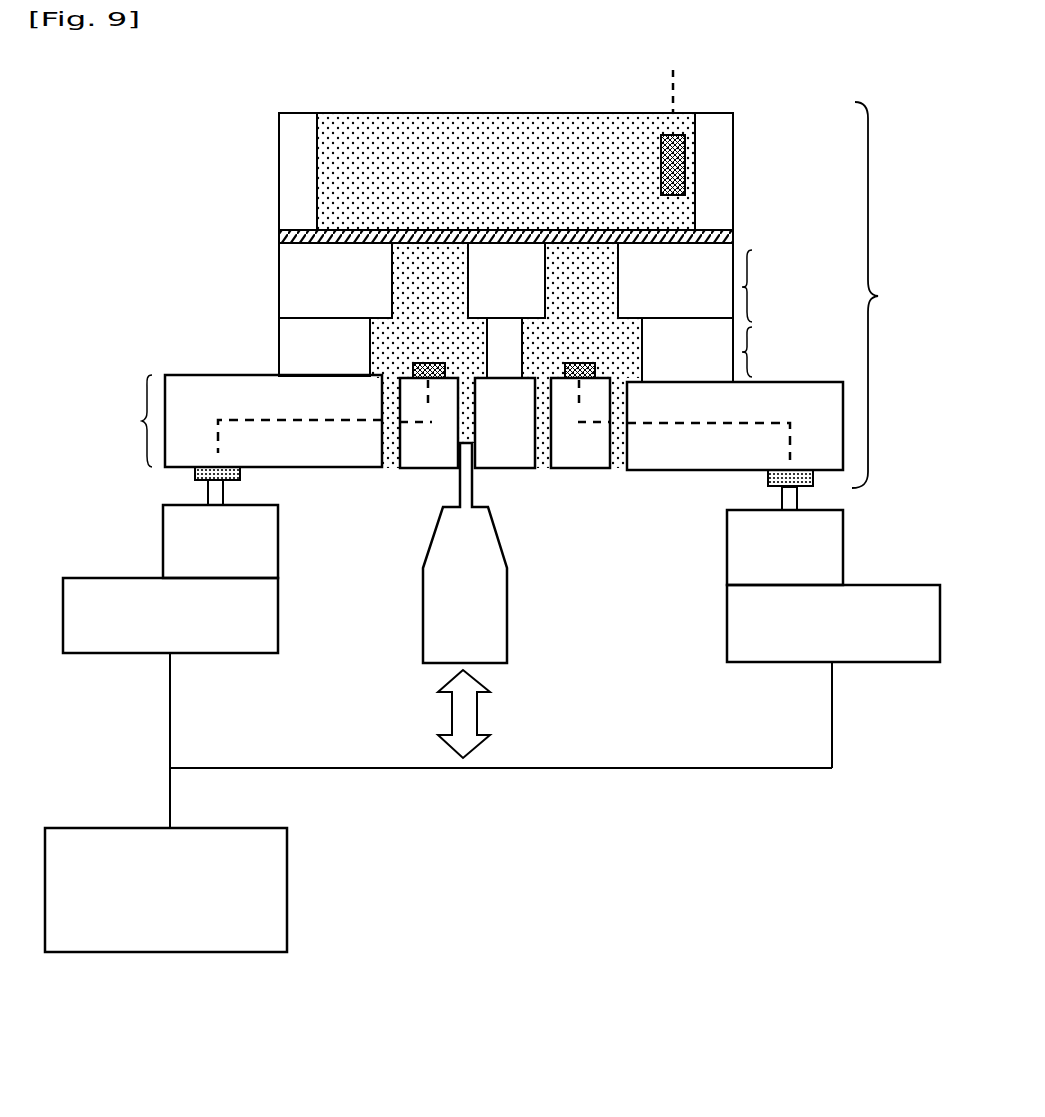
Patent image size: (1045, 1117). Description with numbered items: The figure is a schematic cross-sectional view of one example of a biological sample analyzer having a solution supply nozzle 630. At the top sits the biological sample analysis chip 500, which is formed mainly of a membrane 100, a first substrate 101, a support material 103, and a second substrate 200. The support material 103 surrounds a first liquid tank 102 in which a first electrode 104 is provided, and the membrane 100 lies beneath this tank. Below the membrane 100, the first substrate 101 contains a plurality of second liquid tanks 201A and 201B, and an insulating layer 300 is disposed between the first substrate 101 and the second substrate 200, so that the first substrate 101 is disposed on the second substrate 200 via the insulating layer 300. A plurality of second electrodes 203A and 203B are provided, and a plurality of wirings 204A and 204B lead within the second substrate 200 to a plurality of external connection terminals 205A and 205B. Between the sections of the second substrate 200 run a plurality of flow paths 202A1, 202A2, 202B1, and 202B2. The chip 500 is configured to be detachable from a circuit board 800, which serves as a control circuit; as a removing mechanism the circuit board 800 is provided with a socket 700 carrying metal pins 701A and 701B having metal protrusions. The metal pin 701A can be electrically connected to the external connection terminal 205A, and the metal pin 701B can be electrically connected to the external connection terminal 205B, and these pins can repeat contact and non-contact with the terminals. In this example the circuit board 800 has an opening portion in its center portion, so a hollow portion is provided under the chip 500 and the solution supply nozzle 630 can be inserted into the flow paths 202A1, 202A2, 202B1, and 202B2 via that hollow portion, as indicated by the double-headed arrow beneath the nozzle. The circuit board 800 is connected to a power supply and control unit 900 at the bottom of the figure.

The membrane 100 is at (678, 237).
The first substrate 101 is at (540, 282).
The first liquid tank 102 is at (512, 130).
The support material 103 is at (725, 148).
The first electrode 104 is at (678, 132).
The second substrate 200 is at (467, 422).
The second liquid tank 201A is at (432, 276).
The second liquid tank 201B is at (580, 270).
The flow path 202A1 is at (392, 450).
The flow path 202A2 is at (467, 417).
The flow path 202B1 is at (540, 448).
The flow path 202B2 is at (615, 448).
The second electrode 203A is at (423, 363).
The second electrode 203B is at (575, 363).
The wiring 204A is at (248, 420).
The wiring 204B is at (660, 423).
The external connection terminal 205A is at (242, 473).
The external connection terminal 205B is at (768, 475).
The insulating layer 300 is at (540, 350).
The biological sample analysis chip 500 is at (889, 295).
The solution supply nozzle 630 is at (507, 590).
The socket 700 is at (163, 545).
The metal pin 701A is at (208, 495).
The metal pin 701B is at (797, 501).
The circuit board 800 is at (278, 620).
The power supply and control unit 900 is at (288, 888).